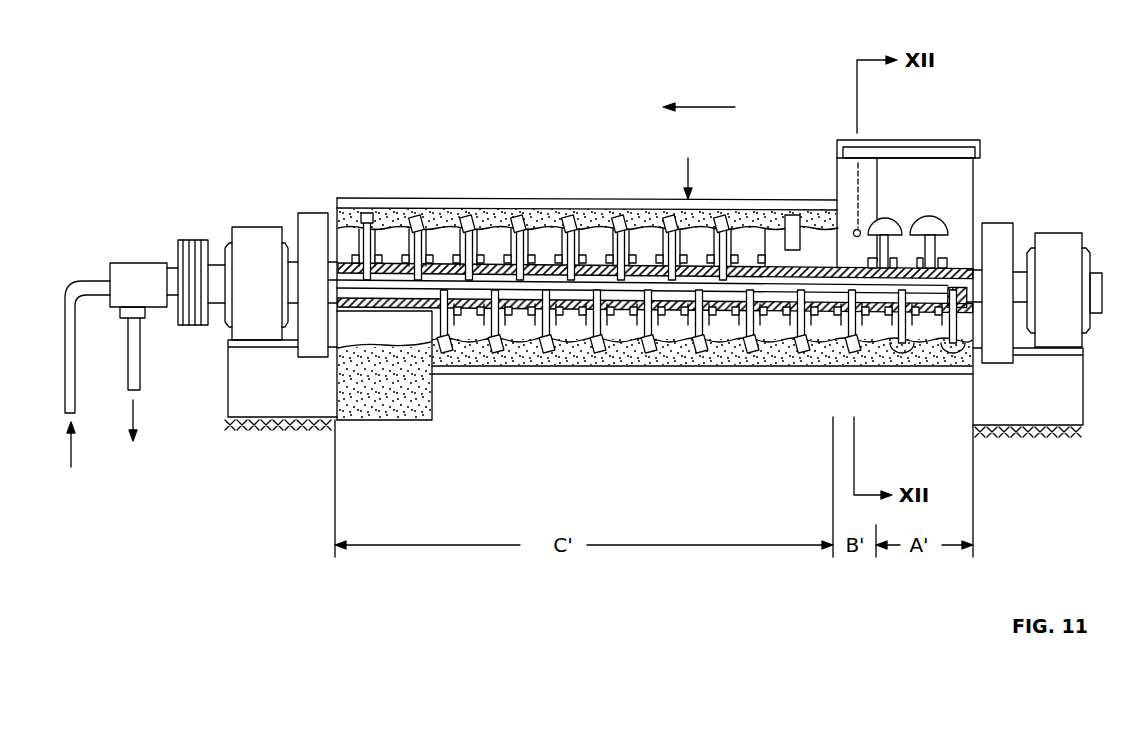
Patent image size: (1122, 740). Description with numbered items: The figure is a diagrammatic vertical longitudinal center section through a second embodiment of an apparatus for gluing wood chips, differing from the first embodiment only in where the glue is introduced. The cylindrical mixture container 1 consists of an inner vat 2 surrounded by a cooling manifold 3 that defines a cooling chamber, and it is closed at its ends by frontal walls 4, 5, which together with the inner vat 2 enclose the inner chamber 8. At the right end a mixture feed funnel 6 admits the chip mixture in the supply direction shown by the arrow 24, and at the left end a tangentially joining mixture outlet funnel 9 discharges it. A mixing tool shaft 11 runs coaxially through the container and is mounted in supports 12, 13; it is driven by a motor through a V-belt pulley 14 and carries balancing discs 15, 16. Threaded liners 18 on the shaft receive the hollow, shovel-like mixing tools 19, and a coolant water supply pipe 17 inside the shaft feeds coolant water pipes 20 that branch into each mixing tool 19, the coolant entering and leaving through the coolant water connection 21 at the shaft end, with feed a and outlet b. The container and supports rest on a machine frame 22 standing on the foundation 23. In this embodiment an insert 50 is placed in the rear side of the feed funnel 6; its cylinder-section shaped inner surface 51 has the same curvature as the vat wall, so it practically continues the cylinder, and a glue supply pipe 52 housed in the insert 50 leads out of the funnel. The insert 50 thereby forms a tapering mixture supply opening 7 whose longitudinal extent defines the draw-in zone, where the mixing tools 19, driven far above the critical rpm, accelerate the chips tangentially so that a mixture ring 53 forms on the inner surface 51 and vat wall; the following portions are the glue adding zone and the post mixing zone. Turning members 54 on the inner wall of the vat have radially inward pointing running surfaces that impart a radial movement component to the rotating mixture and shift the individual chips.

The mixture container 1 is at (687, 166).
The inner vat 2 is at (645, 207).
The cooling manifold 3 is at (613, 208).
The frontal wall 4 is at (975, 213).
The frontal wall 5 is at (337, 208).
The mixture feed funnel 6 is at (960, 165).
The mixture supply opening 7 is at (905, 226).
The inner chamber 8 is at (745, 245).
The mixture outlet funnel 9 is at (420, 405).
The mixing tool shaft 11 is at (590, 232).
The support 12 is at (1068, 255).
The support 13 is at (248, 235).
The V-belt pulley 14 is at (190, 243).
The balancing disc 15 is at (1005, 236).
The balancing disc 16 is at (310, 223).
The coolant water supply pipe 17 is at (533, 290).
The threaded liner 18 is at (480, 240).
The mixing tool 19 is at (455, 248).
The coolant water pipe 20 is at (425, 240).
The coolant water connection 21 is at (132, 275).
The machine frame 22 is at (243, 389).
The foundation 23 is at (262, 432).
The arrow 24 is at (705, 107).
The insert 50 is at (898, 241).
The inner surface 51 is at (846, 256).
The glue supply pipe 52 is at (855, 170).
The mixture ring 53 is at (668, 390).
The turning member 54 is at (795, 215).